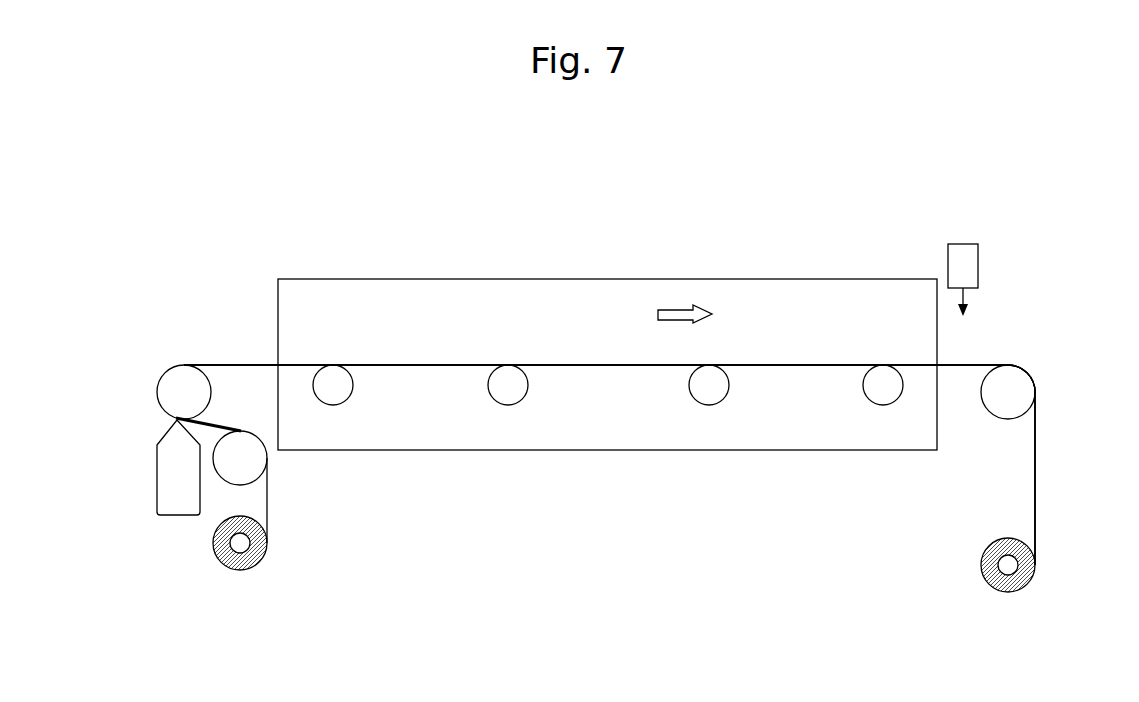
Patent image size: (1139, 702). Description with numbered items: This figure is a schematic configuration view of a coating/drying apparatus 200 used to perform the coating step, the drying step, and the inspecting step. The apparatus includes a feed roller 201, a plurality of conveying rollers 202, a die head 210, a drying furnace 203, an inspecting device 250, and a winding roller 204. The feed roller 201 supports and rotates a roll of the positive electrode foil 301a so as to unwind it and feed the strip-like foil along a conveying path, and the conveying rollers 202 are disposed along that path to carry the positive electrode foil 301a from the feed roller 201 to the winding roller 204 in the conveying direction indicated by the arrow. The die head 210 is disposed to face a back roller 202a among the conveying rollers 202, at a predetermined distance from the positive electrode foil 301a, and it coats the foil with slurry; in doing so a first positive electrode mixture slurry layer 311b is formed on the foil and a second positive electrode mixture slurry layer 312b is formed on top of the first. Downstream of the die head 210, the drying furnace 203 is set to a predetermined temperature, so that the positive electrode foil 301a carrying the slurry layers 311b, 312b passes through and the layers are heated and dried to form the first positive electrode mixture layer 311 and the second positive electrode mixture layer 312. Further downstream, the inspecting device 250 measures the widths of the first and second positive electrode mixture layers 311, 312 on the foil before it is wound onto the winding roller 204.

The coating/drying apparatus 200 is at (940, 210).
The feed roller 201 is at (238, 545).
The conveying rollers 202 is at (883, 405).
The back roller 202a is at (185, 385).
The drying furnace 203 is at (822, 278).
The winding roller 204 is at (1005, 570).
The die head 210 is at (157, 480).
The inspecting device 250 is at (978, 262).
The positive electrode foil 301a is at (248, 365).
The first positive electrode mixture layer 311 is at (999, 444).
The second positive electrode mixture layer 312 is at (1018, 444).
The first positive electrode mixture slurry layer 311b is at (560, 297).
The second positive electrode mixture slurry layer 312b is at (560, 297).